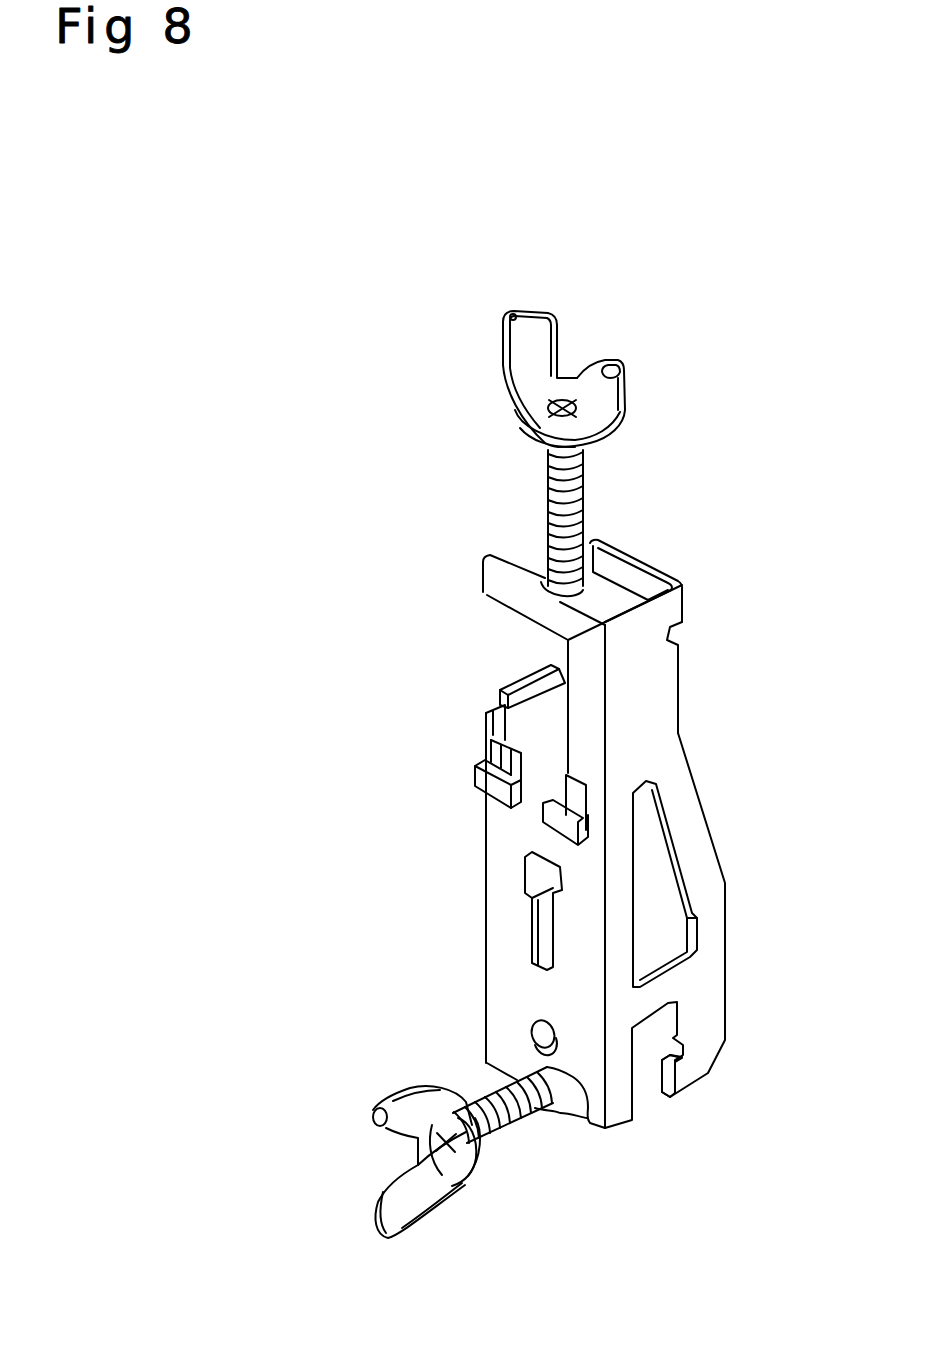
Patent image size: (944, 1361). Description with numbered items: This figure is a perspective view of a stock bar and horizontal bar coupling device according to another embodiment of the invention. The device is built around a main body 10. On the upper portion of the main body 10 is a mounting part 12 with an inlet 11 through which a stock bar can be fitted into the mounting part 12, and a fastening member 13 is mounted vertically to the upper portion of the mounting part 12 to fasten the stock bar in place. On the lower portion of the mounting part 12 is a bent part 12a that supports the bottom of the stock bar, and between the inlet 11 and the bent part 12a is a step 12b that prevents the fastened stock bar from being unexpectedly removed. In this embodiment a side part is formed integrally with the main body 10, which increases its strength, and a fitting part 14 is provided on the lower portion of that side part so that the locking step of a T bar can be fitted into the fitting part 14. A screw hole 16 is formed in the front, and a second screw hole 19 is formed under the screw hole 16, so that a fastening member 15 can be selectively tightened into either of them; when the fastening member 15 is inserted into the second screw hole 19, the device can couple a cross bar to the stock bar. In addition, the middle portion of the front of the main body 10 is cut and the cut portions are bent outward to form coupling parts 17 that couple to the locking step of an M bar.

The main body 10 is at (478, 582).
The inlet 11 is at (503, 647).
The mounting part 12 is at (557, 650).
The bent part 12a is at (543, 729).
The step 12b is at (553, 692).
The fastening member 13 is at (610, 402).
The fitting part 14 is at (648, 1073).
The fastening member 15 is at (438, 1205).
The screw hole 16 is at (532, 1027).
The coupling parts 17 is at (487, 783).
The second screw hole 19 is at (589, 1126).